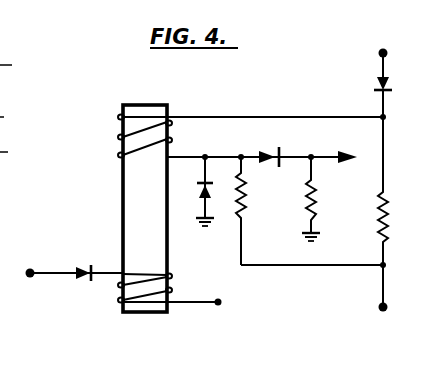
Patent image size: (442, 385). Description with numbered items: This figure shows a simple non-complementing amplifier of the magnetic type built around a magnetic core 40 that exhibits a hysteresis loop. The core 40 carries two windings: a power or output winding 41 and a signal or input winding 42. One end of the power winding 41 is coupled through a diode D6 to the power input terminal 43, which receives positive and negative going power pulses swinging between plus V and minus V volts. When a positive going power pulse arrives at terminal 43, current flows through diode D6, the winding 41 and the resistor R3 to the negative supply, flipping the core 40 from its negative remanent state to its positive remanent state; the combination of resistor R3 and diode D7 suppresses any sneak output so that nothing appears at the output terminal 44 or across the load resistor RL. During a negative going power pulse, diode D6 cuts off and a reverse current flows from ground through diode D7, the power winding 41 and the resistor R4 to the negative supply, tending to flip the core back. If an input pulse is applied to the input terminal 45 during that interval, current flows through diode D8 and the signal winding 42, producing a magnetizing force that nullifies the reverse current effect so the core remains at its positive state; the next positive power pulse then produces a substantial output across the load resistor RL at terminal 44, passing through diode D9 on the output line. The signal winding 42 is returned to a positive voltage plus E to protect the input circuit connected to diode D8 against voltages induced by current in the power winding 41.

The magnetic core 40 is at (163, 108).
The power or output winding 41 is at (119, 137).
The signal or input winding 42 is at (118, 302).
The power input terminal 43 is at (380, 47).
The output terminal 44 is at (332, 152).
The input terminal 45 is at (37, 268).
The diode D6 is at (389, 97).
The diode D7 is at (195, 193).
The diode D8 is at (96, 264).
The diode D9 is at (281, 146).
The resistor R3 is at (247, 209).
The load resistor RL is at (317, 209).
The resistor R4 is at (389, 220).